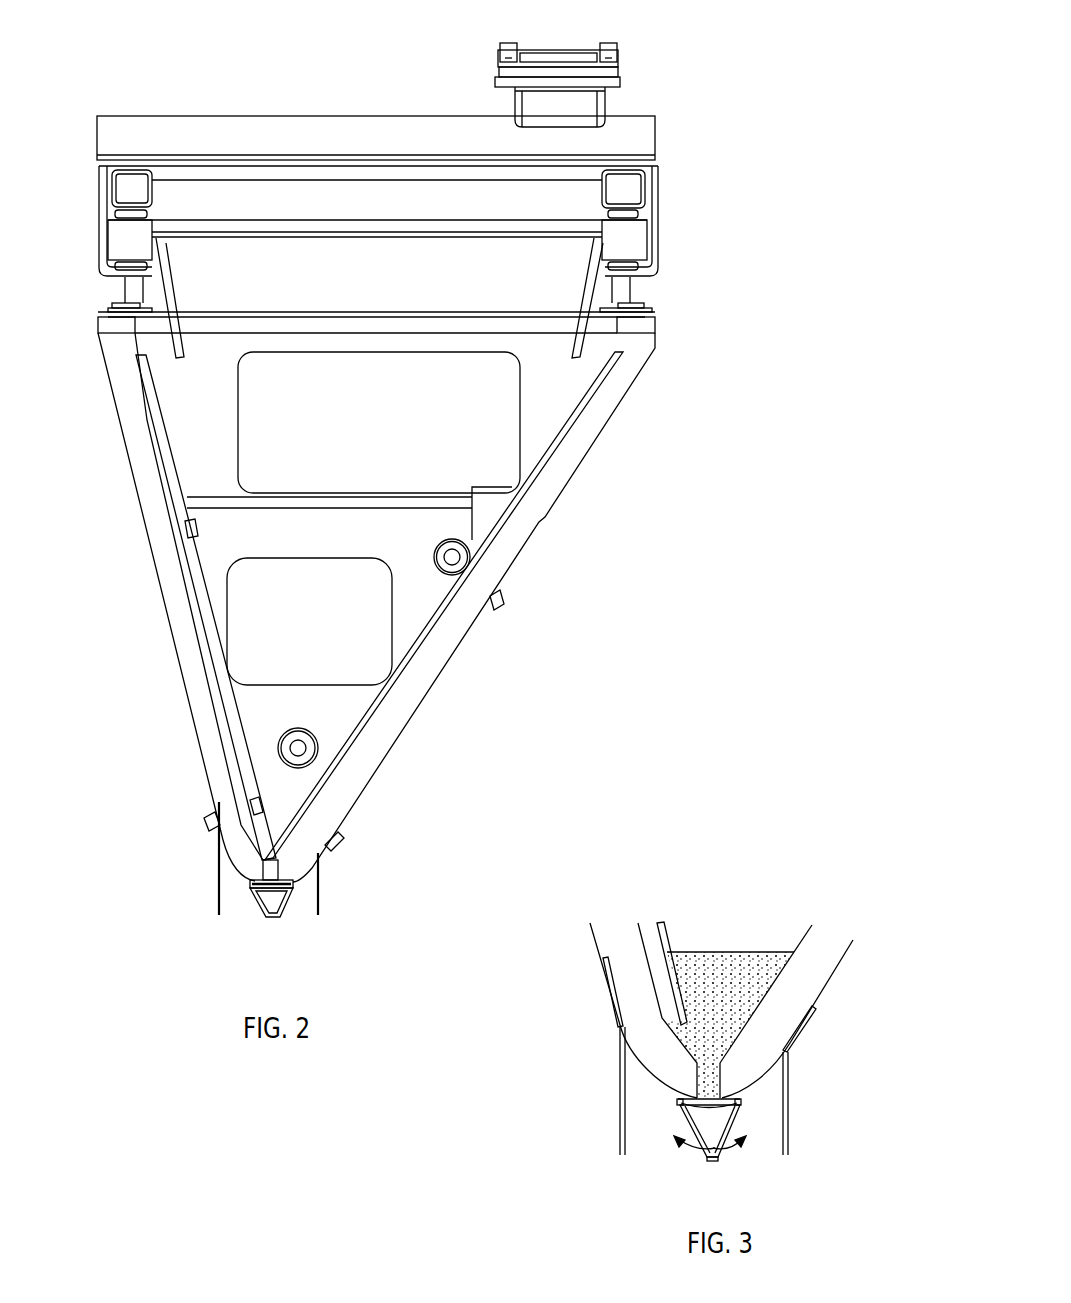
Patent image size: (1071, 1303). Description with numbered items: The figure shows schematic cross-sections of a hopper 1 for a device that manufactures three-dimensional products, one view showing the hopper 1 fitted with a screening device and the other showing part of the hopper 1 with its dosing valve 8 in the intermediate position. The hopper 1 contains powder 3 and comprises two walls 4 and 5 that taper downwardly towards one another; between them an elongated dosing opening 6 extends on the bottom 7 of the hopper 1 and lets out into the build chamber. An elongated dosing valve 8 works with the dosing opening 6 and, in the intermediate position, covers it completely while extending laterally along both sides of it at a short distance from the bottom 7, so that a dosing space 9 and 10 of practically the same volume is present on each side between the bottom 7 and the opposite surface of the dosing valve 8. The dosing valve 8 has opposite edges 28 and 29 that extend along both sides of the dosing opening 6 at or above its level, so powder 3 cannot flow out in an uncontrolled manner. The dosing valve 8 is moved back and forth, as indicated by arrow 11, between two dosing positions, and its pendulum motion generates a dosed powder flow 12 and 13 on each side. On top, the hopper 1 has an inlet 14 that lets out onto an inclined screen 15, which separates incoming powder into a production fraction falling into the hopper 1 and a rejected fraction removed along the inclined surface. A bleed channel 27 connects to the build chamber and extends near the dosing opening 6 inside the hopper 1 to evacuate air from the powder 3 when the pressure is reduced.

In FIG. 2, the hopper 1 is at (110, 438).
In FIG. 3, the hopper 1 is at (860, 958).
In FIG. 3, the powder 3 is at (717, 993).
In FIG. 2, the wall 4 is at (190, 657).
In FIG. 3, the wall 4 is at (630, 977).
In FIG. 2, the wall 5 is at (440, 660).
In FIG. 3, the wall 5 is at (802, 978).
In FIG. 2, the dosing opening 6 is at (276, 874).
In FIG. 3, the dosing opening 6 is at (715, 1093).
In FIG. 2, the bottom 7 is at (248, 875).
In FIG. 3, the bottom 7 is at (680, 1093).
In FIG. 2, the dosing valve 8 is at (283, 898).
In FIG. 3, the dosing valve 8 is at (712, 1137).
In FIG. 3, the dosing space 9 is at (678, 1099).
In FIG. 3, the dosing space 10 is at (740, 1102).
In FIG. 3, the arrow 11 is at (688, 1152).
In FIG. 2, the powder flow 12 is at (245, 922).
In FIG. 2, the powder flow 13 is at (300, 922).
In FIG. 2, the inlet 14 is at (552, 57).
In FIG. 2, the screen 15 is at (318, 220).
In FIG. 2, the bleed channel 27 is at (228, 730).
In FIG. 3, the bleed channel 27 is at (663, 960).
In FIG. 3, the edge 28 is at (680, 1107).
In FIG. 3, the edge 29 is at (742, 1107).